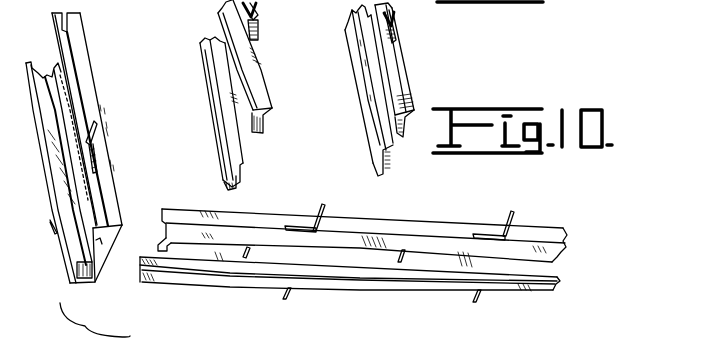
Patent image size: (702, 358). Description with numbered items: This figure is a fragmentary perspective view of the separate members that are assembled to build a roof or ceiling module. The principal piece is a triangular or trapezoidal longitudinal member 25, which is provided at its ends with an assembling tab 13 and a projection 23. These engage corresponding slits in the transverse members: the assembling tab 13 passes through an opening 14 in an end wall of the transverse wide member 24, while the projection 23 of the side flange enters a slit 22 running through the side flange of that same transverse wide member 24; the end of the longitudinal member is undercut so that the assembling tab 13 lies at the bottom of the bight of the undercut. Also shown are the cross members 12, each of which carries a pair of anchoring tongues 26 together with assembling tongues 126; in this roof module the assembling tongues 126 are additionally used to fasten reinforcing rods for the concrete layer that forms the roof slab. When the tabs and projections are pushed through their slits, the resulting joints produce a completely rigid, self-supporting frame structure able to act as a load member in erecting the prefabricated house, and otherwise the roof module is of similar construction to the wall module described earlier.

The cross member 12 is at (255, 68).
The assembling tab 13 is at (232, 185).
The opening 14 is at (249, 255).
The slit 22 is at (87, 270).
The projection 23 is at (141, 281).
The transverse wide member 24 is at (92, 78).
The longitudinal member 25 is at (347, 258).
The anchoring tongue 26 is at (257, 22).
The assembling tongue 126 is at (100, 132).